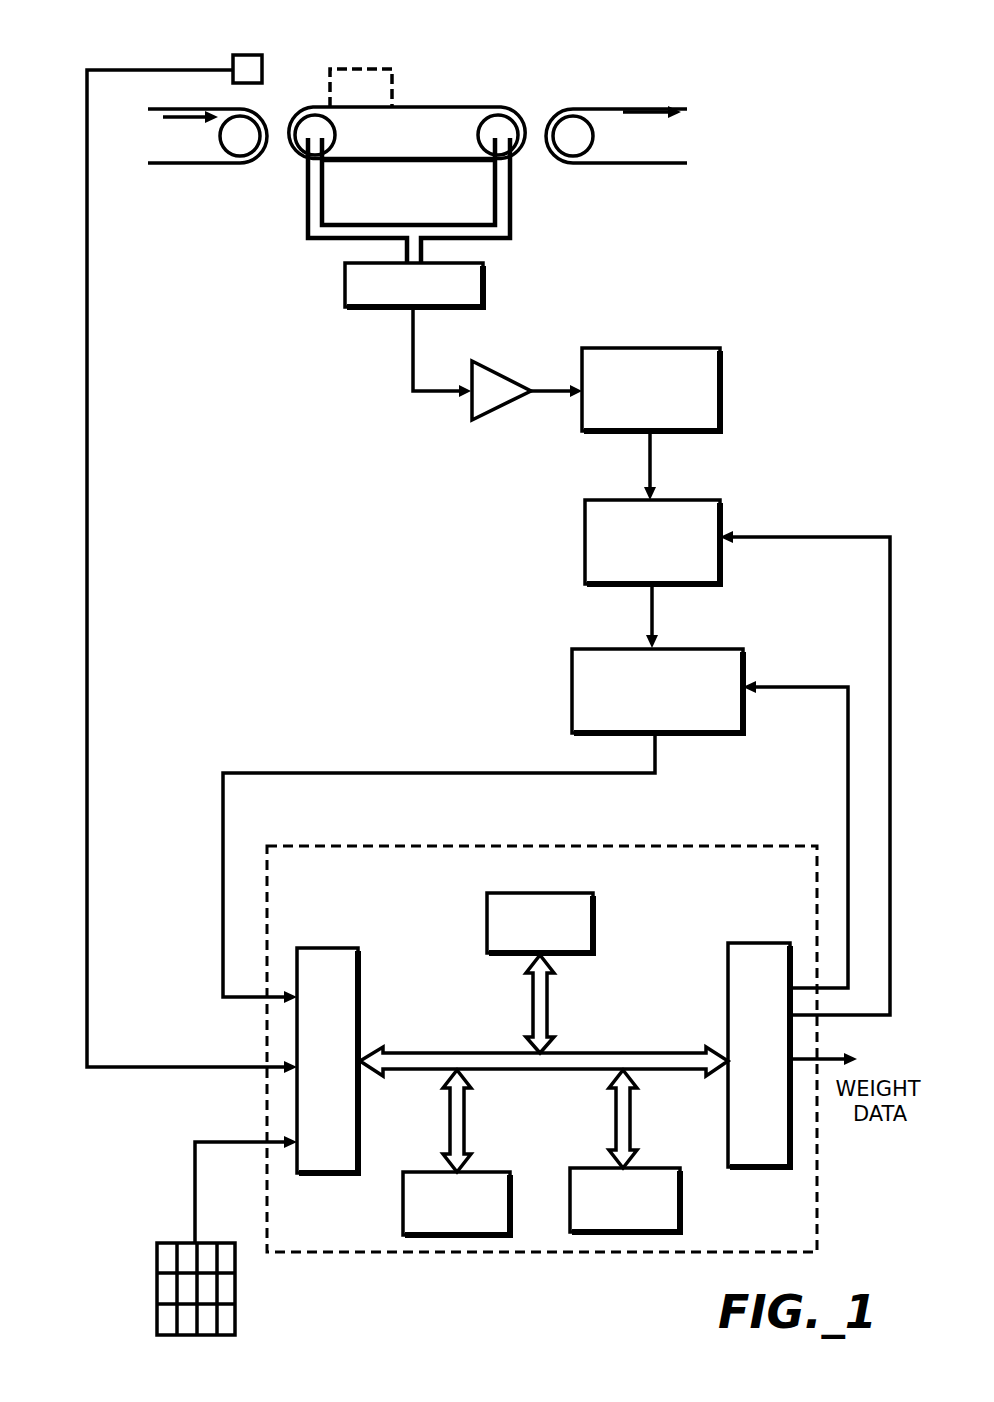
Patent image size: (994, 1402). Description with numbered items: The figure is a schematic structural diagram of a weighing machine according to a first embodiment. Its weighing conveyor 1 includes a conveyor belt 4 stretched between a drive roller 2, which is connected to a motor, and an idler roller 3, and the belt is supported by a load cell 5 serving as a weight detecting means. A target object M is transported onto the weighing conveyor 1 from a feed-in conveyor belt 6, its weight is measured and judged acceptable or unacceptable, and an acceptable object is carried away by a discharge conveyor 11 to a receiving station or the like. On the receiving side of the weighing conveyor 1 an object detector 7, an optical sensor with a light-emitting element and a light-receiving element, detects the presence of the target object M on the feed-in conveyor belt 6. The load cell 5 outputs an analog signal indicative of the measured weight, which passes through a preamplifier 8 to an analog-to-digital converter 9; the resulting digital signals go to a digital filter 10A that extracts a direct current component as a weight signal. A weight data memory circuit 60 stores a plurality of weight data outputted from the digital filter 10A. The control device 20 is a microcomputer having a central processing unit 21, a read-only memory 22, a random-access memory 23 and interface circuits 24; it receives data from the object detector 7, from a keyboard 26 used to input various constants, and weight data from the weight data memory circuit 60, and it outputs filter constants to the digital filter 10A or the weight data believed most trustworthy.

The weighing conveyor 1 is at (268, 216).
The drive roller 2 is at (517, 154).
The idler roller 3 is at (293, 157).
The conveyor belt 4 is at (472, 106).
The load cell 5 is at (484, 286).
The feed-in conveyor belt 6 is at (207, 165).
The object detector 7 is at (249, 55).
The preamplifier 8 is at (496, 376).
The analog-to-digital converter 9 is at (664, 347).
The digital filter 10A is at (700, 498).
The discharge conveyor 11 is at (610, 102).
The control device 20 is at (427, 1268).
The central processing unit 21 is at (556, 893).
The read-only memory 22 is at (478, 1171).
The random-access memory 23 is at (682, 1211).
The interface circuits 24 is at (327, 947).
The keyboard 26 is at (238, 1321).
The weight data memory circuit 60 is at (737, 647).
The target object M is at (367, 68).